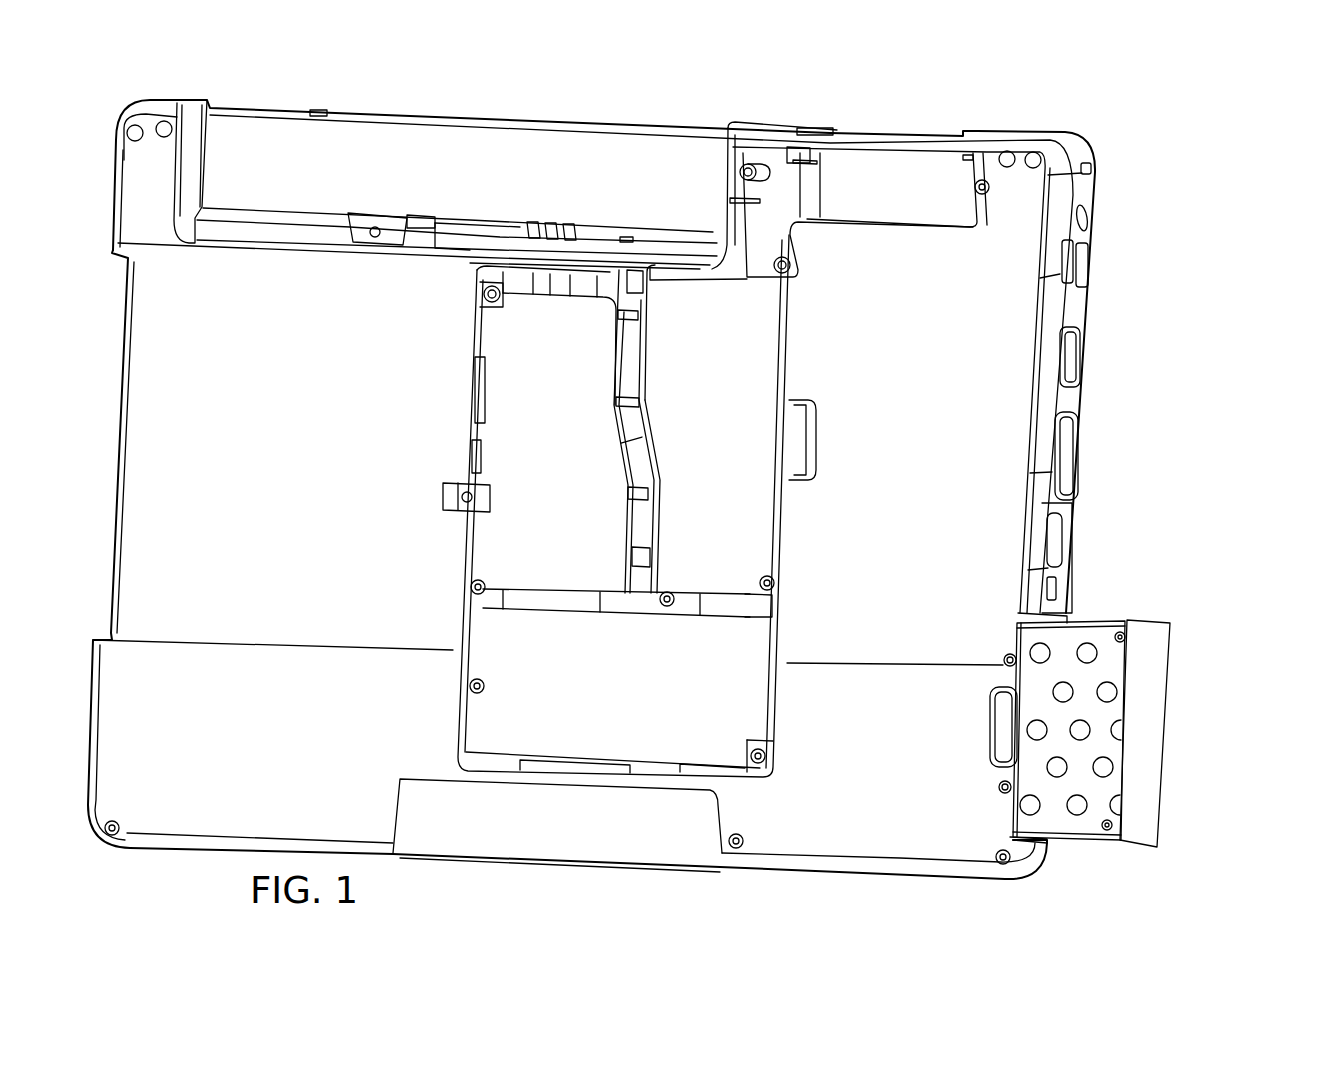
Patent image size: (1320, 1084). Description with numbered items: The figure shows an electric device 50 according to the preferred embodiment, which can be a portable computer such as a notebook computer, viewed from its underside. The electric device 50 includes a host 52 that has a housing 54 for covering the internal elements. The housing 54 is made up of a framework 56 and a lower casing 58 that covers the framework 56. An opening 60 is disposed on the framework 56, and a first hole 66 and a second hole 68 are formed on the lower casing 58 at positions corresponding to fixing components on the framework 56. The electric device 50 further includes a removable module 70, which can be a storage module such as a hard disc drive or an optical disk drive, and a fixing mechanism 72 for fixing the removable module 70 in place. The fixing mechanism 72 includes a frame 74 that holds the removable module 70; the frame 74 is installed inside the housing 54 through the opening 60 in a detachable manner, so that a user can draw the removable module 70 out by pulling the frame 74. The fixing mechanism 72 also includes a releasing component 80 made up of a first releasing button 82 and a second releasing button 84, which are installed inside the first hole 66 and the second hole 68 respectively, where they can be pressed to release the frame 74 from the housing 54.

The electric device 50 is at (1190, 140).
The host 52 is at (1139, 393).
The housing 54 is at (1141, 391).
The framework 56 is at (1129, 423).
The lower casing 58 is at (1022, 330).
The opening 60 is at (1055, 841).
The first hole 66 is at (998, 800).
The second hole 68 is at (1000, 645).
The removable module 70 is at (1140, 706).
The fixing mechanism 72 is at (1166, 580).
The frame 74 is at (1190, 702).
The releasing component 80 is at (1142, 729).
The first releasing button 82 is at (1017, 787).
The second releasing button 84 is at (1017, 667).